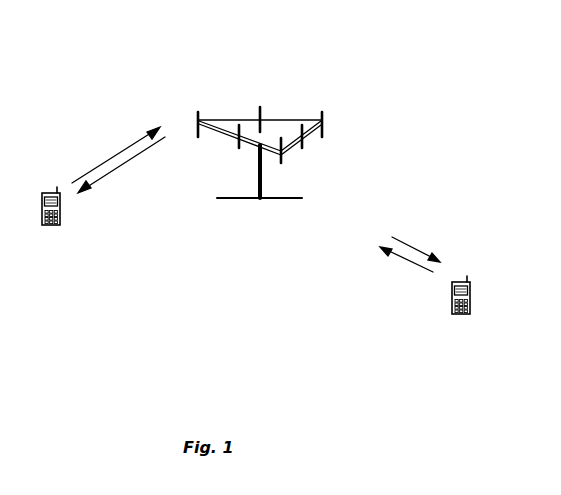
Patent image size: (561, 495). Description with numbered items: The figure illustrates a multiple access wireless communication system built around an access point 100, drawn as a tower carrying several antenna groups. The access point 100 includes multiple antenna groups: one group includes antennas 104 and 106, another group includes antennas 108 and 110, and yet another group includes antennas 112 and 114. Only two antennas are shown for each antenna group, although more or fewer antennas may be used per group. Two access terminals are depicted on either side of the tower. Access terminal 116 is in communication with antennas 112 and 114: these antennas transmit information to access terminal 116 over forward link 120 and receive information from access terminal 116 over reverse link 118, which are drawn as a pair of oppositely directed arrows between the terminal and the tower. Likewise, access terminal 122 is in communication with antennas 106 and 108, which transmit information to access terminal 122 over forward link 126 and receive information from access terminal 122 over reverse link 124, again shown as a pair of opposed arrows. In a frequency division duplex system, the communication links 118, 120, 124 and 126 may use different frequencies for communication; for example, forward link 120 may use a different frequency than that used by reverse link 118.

The access point 100 is at (246, 198).
The antenna 104 is at (281, 163).
The antenna 106 is at (302, 148).
The antenna 108 is at (323, 133).
The antenna 110 is at (262, 108).
The antenna 112 is at (199, 119).
The antenna 114 is at (239, 149).
The access terminal 116 is at (50, 192).
The reverse link 118 is at (117, 153).
The forward link 120 is at (125, 164).
The access terminal 122 is at (463, 277).
The reverse link 124 is at (402, 256).
The forward link 126 is at (416, 249).